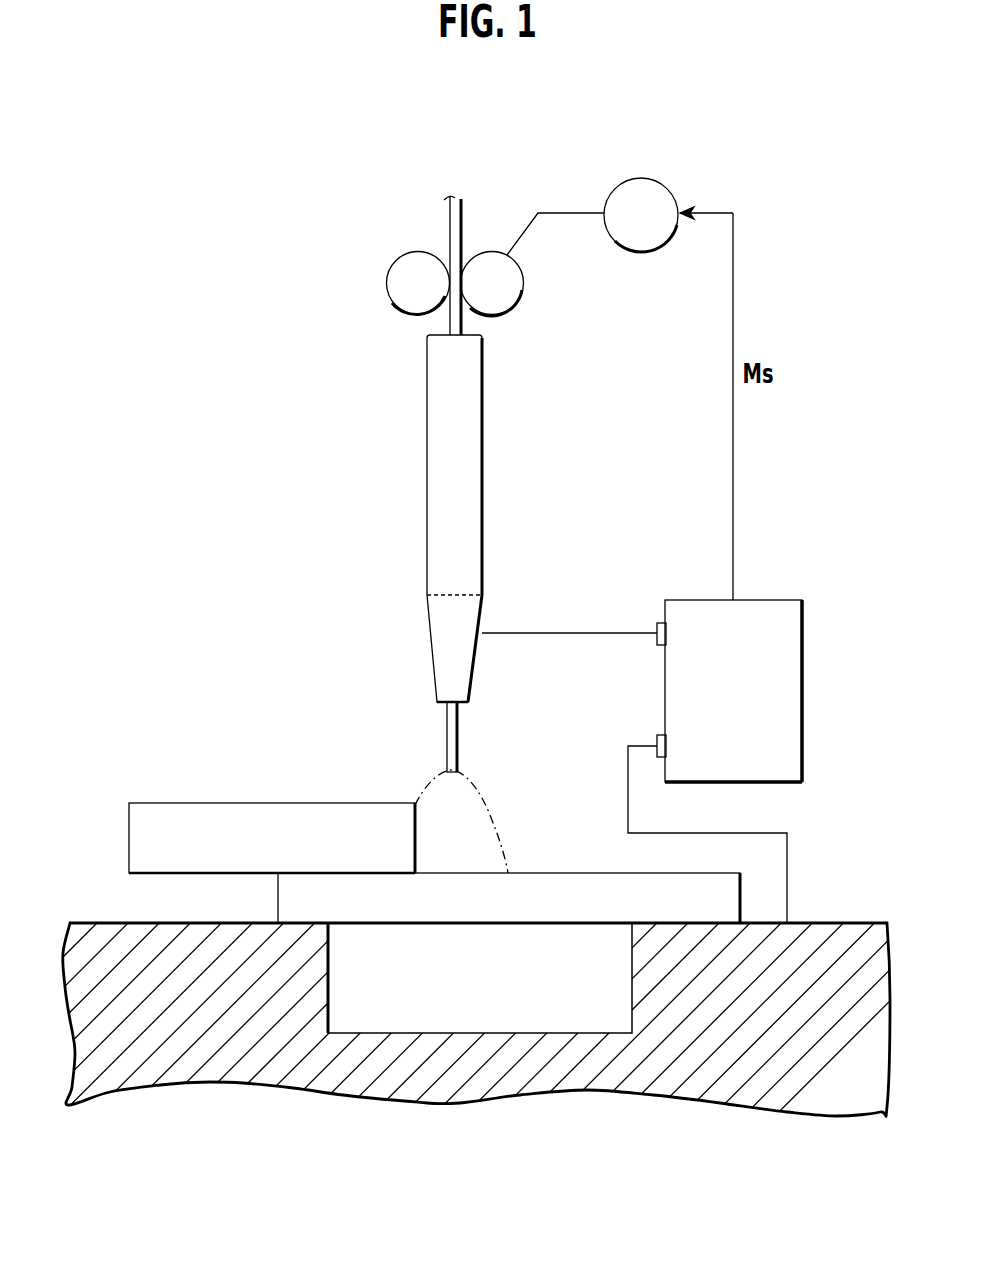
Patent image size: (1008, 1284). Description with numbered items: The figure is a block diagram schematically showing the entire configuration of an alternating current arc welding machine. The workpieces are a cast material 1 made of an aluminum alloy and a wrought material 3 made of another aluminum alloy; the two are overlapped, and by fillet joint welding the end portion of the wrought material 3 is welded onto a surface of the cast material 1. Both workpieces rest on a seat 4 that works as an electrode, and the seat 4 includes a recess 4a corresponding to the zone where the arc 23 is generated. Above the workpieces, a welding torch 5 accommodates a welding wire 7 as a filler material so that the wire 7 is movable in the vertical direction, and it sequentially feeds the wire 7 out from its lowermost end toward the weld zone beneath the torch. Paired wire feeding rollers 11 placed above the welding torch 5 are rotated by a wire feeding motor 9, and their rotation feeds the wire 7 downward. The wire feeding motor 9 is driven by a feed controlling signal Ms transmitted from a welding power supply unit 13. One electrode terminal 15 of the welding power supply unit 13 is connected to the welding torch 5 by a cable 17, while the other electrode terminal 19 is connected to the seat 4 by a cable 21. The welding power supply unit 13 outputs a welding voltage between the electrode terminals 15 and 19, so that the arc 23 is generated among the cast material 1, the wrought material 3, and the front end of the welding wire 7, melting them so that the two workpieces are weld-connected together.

The cast material 1 is at (553, 873).
The wrought material 3 is at (205, 803).
The seat 4 is at (858, 923).
The recess 4a is at (457, 1035).
The welding torch 5 is at (427, 475).
The welding wire 7 is at (446, 748).
The wire feeding motor 9 is at (641, 178).
The wire feeding rollers 11 is at (388, 283).
The welding power supply unit 13 is at (802, 685).
The electrode terminal 15 is at (657, 628).
The cable 17 is at (533, 633).
The electrode terminal 19 is at (657, 740).
The cable 21 is at (628, 790).
The arc 23 is at (483, 790).